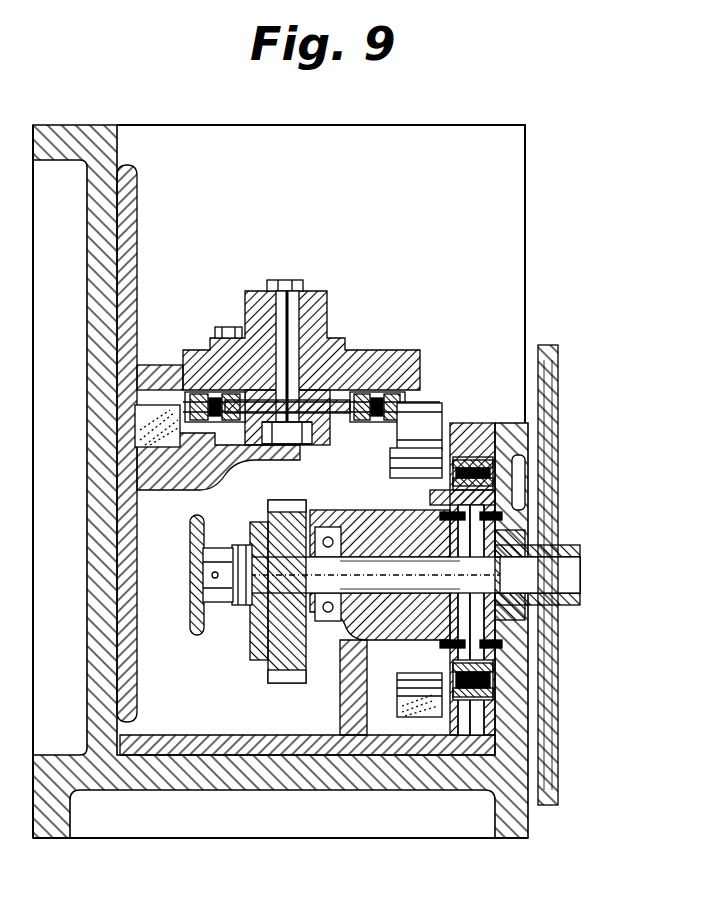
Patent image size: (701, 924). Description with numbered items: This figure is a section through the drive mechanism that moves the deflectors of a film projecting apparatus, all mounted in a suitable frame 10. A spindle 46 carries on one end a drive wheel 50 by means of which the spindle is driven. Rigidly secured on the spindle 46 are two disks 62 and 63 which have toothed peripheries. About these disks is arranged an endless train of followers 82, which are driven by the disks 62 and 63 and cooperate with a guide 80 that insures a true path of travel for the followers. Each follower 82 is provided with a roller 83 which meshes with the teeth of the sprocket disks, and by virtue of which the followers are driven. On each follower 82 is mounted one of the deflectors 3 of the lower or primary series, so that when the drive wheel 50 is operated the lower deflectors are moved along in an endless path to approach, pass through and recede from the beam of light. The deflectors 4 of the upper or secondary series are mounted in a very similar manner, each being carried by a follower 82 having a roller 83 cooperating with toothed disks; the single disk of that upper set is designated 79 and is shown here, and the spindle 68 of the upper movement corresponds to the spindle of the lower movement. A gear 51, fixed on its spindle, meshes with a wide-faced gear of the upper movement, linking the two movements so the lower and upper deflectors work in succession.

The deflector of the lower or primary series 3 is at (395, 472).
The deflector of the upper or secondary series 4 is at (135, 425).
The frame 10 is at (225, 790).
The spindle 46 is at (412, 575).
The drive wheel 50 is at (547, 344).
The gear 51 is at (285, 684).
The disk 62 is at (440, 642).
The disk 63 is at (470, 640).
The spindle 68 is at (292, 279).
The single disk 79 is at (235, 398).
The guide 80 is at (490, 425).
The follower 82 is at (392, 398).
The roller 83 is at (360, 392).